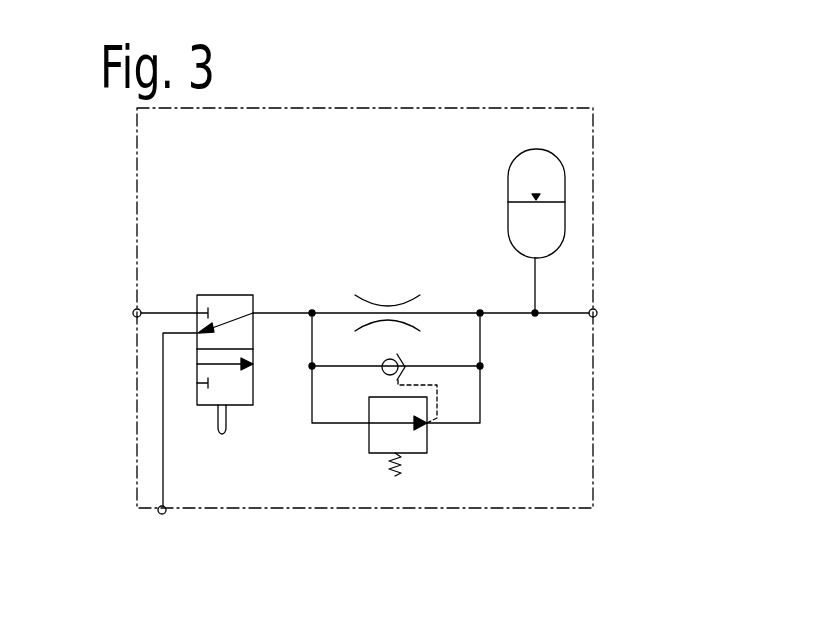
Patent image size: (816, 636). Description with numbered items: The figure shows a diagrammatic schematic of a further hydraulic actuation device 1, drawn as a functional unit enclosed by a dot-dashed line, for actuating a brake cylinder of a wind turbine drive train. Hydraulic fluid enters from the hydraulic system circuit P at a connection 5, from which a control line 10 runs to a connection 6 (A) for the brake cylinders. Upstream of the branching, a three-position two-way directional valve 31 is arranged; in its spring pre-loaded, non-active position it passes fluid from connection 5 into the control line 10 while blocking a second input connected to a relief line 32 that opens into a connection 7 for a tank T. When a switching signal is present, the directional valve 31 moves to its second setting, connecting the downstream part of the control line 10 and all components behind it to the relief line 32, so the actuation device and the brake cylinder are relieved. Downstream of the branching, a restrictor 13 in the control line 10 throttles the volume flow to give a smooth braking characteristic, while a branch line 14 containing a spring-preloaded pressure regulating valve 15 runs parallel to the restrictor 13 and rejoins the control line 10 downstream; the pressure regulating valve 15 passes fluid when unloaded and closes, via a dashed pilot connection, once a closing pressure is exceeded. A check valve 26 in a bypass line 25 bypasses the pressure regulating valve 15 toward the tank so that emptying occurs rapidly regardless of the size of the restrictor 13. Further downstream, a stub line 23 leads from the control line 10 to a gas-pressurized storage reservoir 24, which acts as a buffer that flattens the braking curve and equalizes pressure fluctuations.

The hydraulic actuation device 1 is at (462, 105).
The connection 5 is at (134, 318).
The connection 6 is at (598, 306).
The connection 7 is at (158, 515).
The control line 10 is at (168, 312).
The restrictor 13 is at (390, 306).
The branch line 14 is at (311, 395).
The pressure regulating valve 15 is at (414, 453).
The stub line 23 is at (535, 277).
The storage reservoir 24 is at (565, 186).
The bypass line 25 is at (322, 366).
The check valve 26 is at (398, 355).
The 3/2-way valve 31 is at (228, 407).
The relief line 32 is at (161, 400).